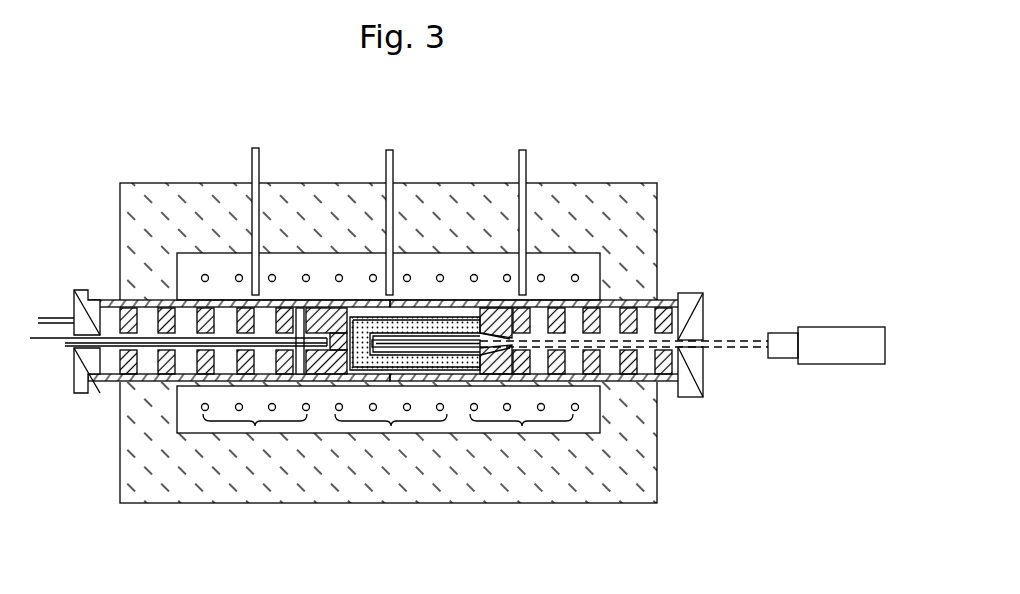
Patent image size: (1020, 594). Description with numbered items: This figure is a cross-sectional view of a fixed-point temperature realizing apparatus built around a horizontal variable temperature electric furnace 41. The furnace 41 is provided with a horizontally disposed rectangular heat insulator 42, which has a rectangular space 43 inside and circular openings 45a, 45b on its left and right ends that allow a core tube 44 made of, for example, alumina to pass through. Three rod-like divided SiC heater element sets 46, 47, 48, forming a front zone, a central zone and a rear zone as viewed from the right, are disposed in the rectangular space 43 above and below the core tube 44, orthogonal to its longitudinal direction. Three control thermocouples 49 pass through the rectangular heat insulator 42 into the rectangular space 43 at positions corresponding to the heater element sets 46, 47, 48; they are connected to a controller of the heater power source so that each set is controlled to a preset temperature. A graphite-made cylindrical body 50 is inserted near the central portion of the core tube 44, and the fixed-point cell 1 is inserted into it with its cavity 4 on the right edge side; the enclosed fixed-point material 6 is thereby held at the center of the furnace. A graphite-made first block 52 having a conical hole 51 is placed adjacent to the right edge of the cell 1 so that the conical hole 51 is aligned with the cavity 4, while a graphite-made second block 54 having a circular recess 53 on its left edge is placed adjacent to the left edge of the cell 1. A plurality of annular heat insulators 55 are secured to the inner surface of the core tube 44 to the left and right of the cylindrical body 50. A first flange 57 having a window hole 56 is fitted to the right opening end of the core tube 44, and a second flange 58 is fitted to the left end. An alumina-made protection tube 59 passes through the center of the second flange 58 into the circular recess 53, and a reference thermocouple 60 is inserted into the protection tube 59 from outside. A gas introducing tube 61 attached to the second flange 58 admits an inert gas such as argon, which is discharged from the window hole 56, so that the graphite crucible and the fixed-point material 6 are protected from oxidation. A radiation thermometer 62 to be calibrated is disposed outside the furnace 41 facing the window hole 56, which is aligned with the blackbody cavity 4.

The fixed-point cell 1 is at (410, 320).
The cavity 4 is at (450, 320).
The fixed-point material 6 is at (302, 373).
The horizontal variable temperature electric furnace 41 is at (576, 149).
The rectangular heat insulator 42 is at (620, 185).
The rectangular space 43 is at (592, 262).
The core tube 44 is at (430, 318).
The circular opening 45a is at (126, 303).
The circular opening 45b is at (655, 300).
The heater element set 46 is at (522, 426).
The heater element set 47 is at (391, 426).
The heater element set 48 is at (255, 426).
The control thermocouple 49 is at (256, 150).
The graphite-made cylindrical body 50 is at (482, 322).
The conical hole 51 is at (474, 370).
The graphite-made first block 52 is at (492, 374).
The circular recess 53 is at (304, 330).
The graphite-made second block 54 is at (332, 322).
The annular heat insulator 55 is at (205, 380).
The window hole 56 is at (703, 330).
The first flange 57 is at (703, 370).
The second flange 58 is at (84, 290).
The protection tube 59 is at (102, 393).
The reference thermocouple 60 is at (40, 347).
The gas introducing tube 61 is at (46, 318).
The radiation thermometer 62 is at (846, 327).